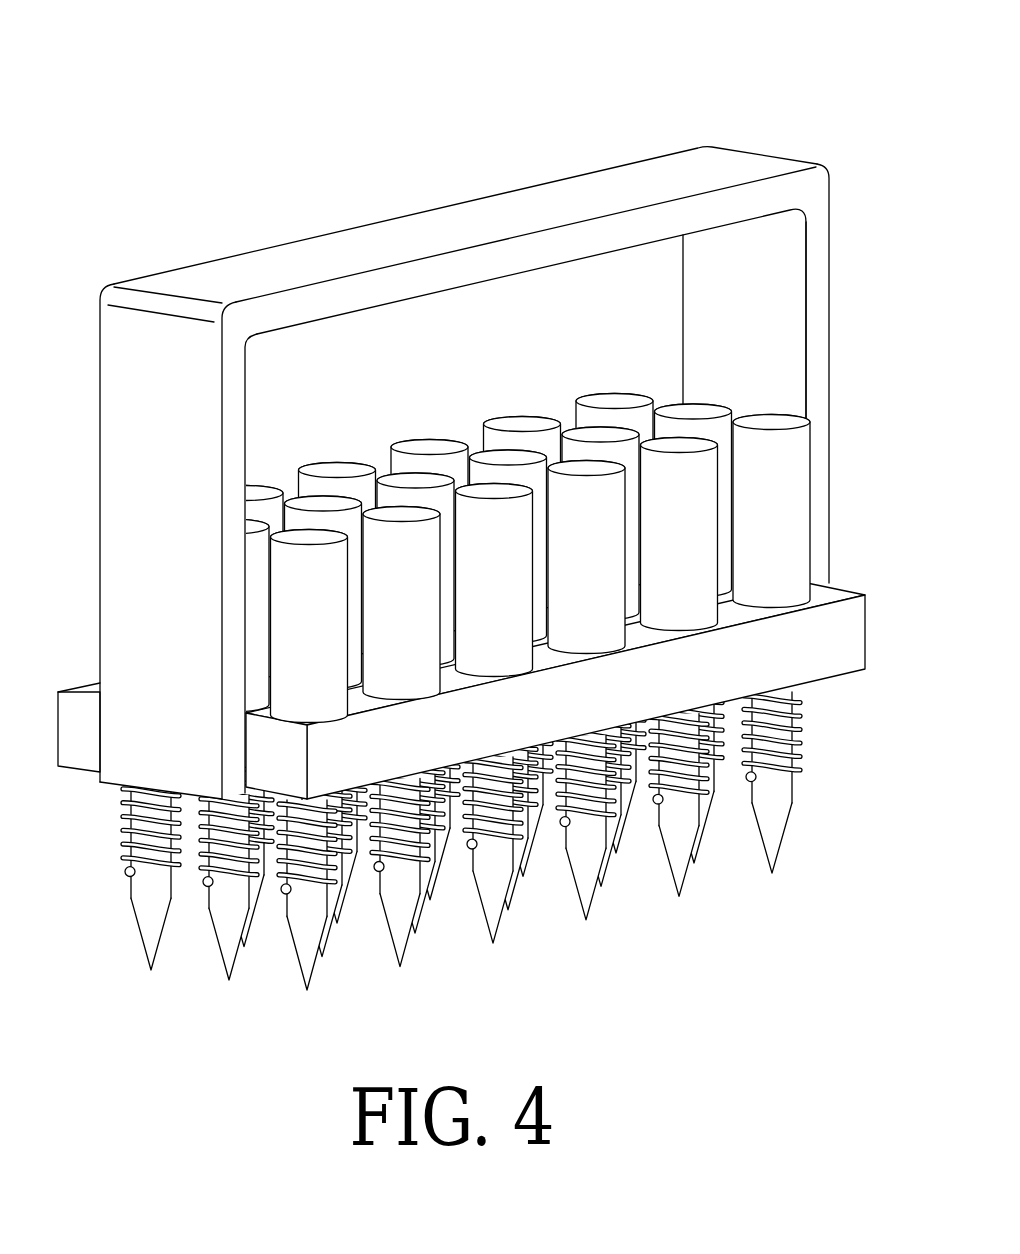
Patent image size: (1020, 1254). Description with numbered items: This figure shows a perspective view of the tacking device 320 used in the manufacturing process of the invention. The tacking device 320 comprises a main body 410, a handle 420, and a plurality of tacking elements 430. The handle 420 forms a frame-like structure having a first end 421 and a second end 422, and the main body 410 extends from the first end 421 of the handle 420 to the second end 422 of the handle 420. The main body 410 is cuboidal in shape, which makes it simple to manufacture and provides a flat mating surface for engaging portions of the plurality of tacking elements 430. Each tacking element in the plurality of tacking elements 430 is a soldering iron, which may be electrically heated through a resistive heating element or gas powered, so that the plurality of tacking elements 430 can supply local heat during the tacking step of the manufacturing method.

The tacking device 320 is at (474, 506).
The handle 420 is at (474, 468).
The first end of the handle 421 is at (153, 725).
The second end of the handle 422 is at (822, 547).
The main body 410 is at (843, 590).
The plurality of tacking elements 430 is at (339, 452).